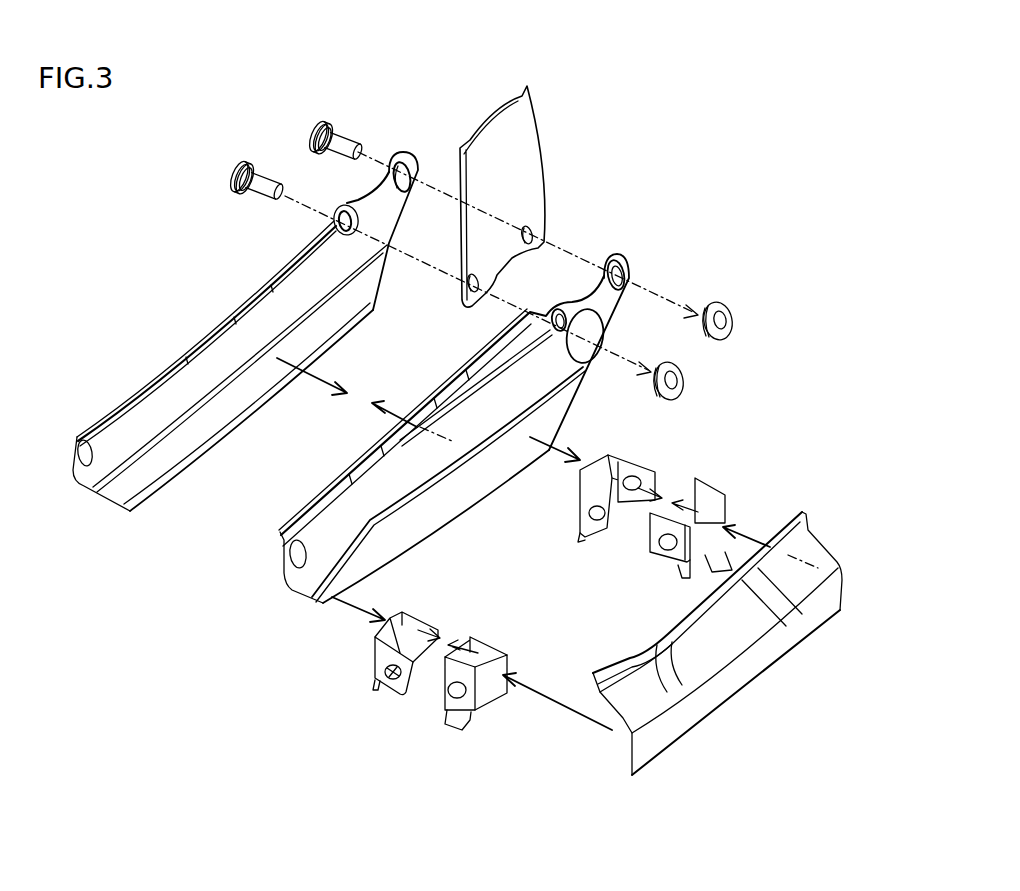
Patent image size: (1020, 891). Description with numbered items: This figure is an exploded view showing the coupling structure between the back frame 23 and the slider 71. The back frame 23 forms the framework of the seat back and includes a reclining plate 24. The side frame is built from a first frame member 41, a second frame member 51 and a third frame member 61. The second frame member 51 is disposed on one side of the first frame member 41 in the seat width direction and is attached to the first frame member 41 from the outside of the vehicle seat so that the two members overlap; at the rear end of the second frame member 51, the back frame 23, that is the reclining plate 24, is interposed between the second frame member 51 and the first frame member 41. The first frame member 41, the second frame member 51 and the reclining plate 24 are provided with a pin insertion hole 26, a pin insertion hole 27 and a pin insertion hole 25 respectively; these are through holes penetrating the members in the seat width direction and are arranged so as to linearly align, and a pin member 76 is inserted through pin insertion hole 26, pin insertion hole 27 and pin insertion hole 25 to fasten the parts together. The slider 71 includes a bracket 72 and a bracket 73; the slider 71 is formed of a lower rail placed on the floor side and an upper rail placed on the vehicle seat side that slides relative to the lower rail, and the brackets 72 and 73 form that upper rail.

The back frame 23 is at (518, 212).
The reclining plate 24 is at (529, 168).
The pin insertion hole 25 is at (532, 235).
The pin insertion hole 26 is at (622, 274).
The pin insertion hole 27 is at (405, 176).
The first frame member 41 is at (474, 460).
The second frame member 51 is at (259, 345).
The third frame member 61 is at (674, 768).
The slider 71 is at (549, 596).
The bracket 72 is at (467, 748).
The bracket 73 is at (755, 494).
The pin member 76 is at (303, 110).